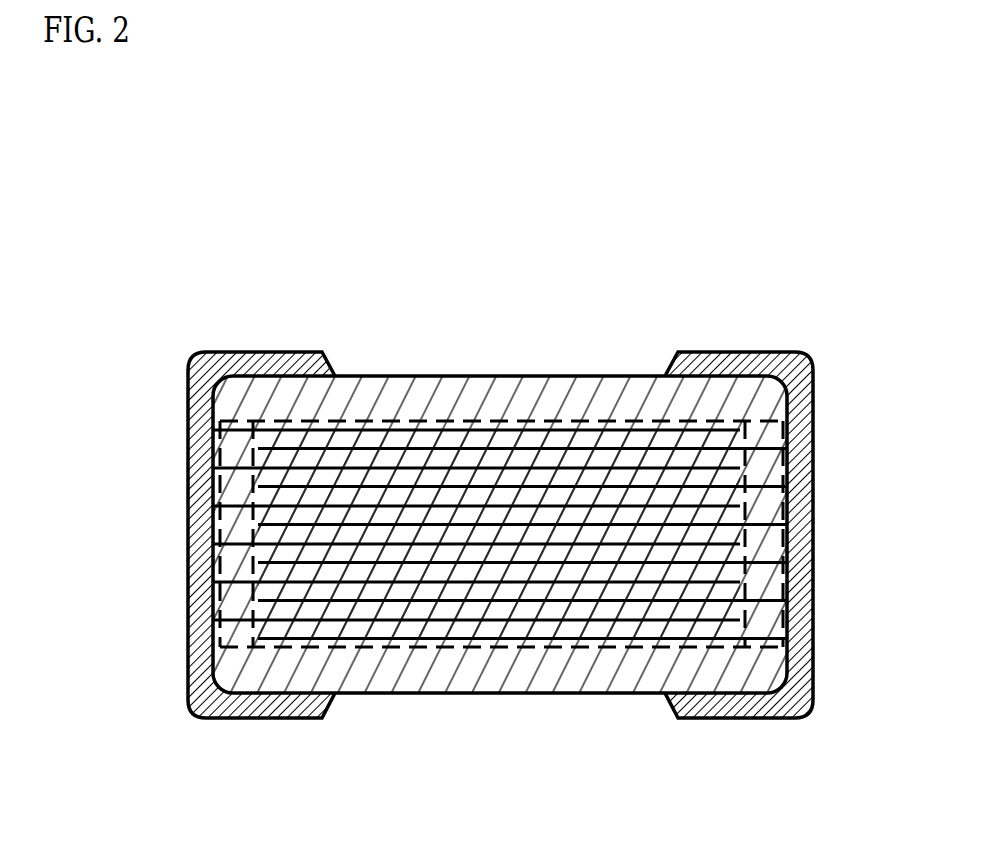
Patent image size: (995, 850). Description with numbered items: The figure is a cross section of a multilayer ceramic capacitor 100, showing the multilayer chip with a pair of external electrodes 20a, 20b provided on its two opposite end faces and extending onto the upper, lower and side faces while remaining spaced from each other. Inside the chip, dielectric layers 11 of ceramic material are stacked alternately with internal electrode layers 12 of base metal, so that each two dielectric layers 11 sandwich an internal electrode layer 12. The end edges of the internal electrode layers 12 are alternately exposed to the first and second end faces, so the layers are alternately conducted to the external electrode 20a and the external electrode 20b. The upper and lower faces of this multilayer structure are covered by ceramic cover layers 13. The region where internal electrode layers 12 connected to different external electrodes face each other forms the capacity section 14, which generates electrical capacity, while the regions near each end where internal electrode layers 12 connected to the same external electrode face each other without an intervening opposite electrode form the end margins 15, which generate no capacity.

The multilayer ceramic capacitor 100 is at (493, 483).
The external electrode 20a is at (213, 352).
The external electrode 20b is at (778, 352).
The cover layer 13 is at (400, 388).
The dielectric layer 11 is at (605, 610).
The internal electrode layer 12 is at (445, 585).
The capacity section 14 is at (522, 420).
The end margin 15 is at (237, 421).